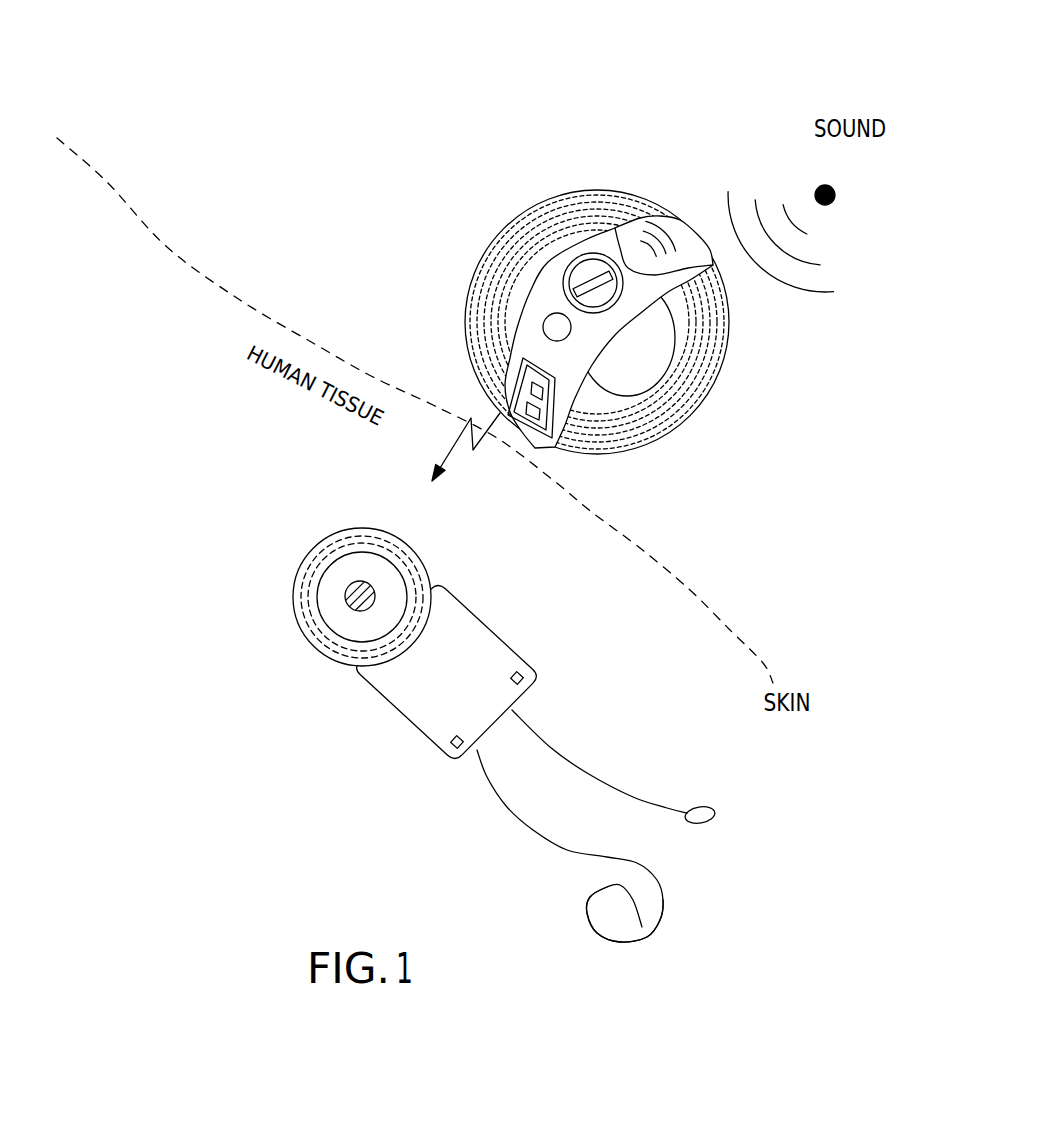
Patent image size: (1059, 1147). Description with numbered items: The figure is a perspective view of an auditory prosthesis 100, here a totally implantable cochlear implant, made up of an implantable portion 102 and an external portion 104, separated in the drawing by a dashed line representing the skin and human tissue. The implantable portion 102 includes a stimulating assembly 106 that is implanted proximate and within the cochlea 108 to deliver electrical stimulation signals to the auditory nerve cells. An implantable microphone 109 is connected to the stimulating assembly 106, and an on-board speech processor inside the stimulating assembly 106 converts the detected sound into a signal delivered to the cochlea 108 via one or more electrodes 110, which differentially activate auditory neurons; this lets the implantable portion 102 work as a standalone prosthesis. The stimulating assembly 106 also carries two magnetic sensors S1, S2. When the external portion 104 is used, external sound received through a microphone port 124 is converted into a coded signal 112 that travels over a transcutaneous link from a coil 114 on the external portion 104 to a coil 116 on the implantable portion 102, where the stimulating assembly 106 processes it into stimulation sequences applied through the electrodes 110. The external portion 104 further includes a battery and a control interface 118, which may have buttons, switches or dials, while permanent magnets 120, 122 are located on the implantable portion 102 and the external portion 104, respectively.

The auditory prosthesis 100 is at (320, 200).
The implantable portion 102 is at (447, 750).
The external portion 104 is at (615, 265).
The stimulating assembly 106 is at (397, 704).
The cochlea 108 is at (671, 971).
The implantable microphone 109 is at (703, 808).
The electrodes 110 is at (667, 891).
The coded signal 112 is at (446, 472).
The coil 114 is at (693, 380).
The coil 116 is at (307, 583).
The control interface 118 is at (535, 448).
The permanent magnet 120 is at (345, 602).
The permanent magnet 122 is at (592, 271).
The microphone port 124 is at (543, 327).
The magnetic sensor S1 is at (521, 676).
The magnetic sensor S2 is at (455, 745).